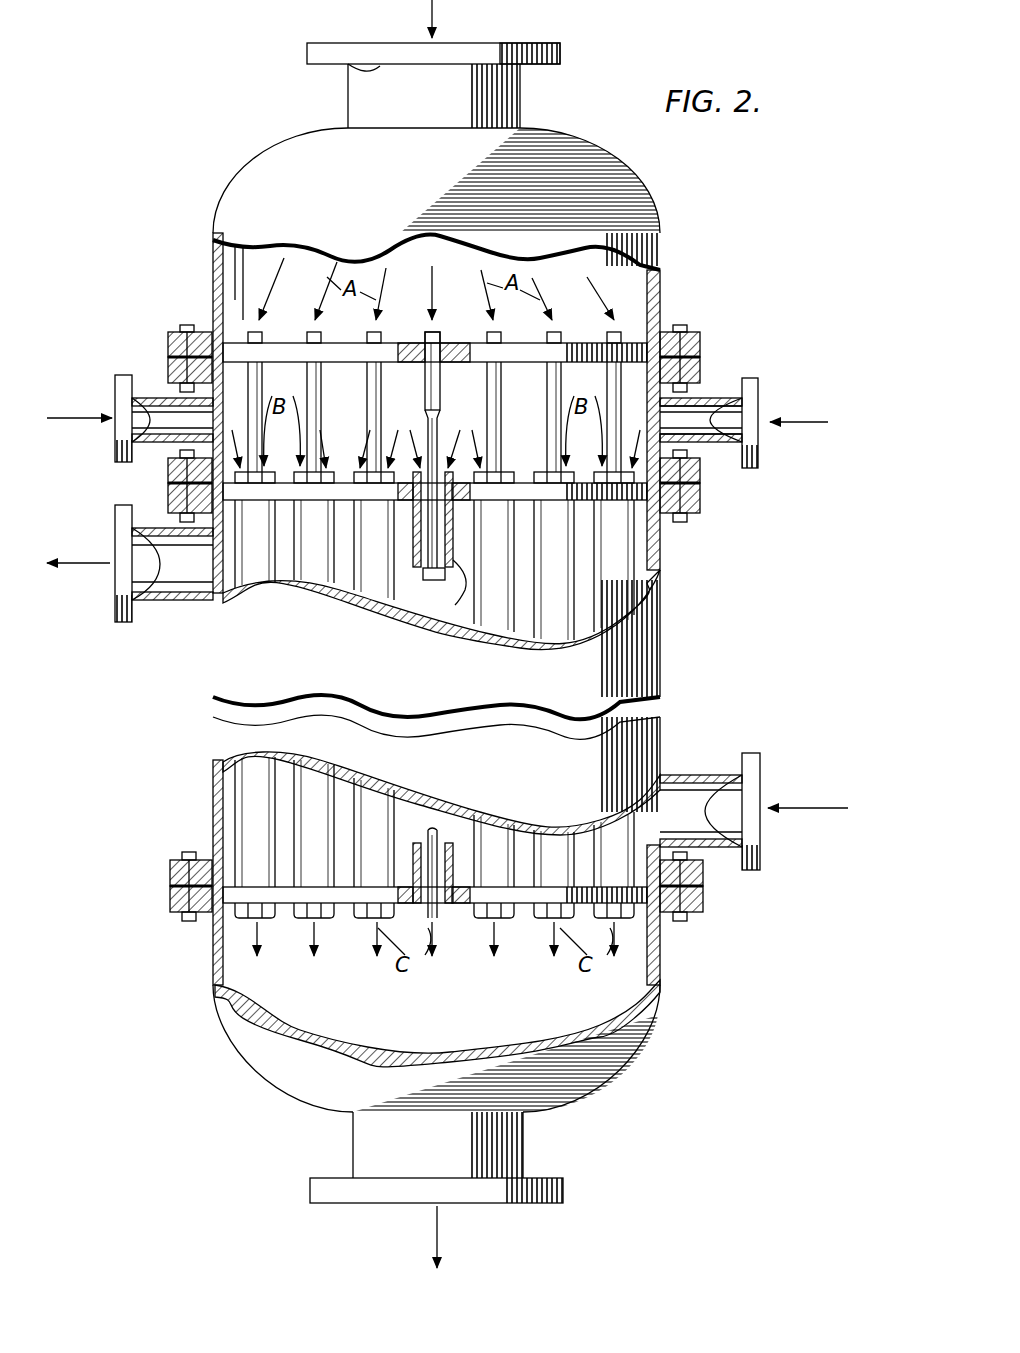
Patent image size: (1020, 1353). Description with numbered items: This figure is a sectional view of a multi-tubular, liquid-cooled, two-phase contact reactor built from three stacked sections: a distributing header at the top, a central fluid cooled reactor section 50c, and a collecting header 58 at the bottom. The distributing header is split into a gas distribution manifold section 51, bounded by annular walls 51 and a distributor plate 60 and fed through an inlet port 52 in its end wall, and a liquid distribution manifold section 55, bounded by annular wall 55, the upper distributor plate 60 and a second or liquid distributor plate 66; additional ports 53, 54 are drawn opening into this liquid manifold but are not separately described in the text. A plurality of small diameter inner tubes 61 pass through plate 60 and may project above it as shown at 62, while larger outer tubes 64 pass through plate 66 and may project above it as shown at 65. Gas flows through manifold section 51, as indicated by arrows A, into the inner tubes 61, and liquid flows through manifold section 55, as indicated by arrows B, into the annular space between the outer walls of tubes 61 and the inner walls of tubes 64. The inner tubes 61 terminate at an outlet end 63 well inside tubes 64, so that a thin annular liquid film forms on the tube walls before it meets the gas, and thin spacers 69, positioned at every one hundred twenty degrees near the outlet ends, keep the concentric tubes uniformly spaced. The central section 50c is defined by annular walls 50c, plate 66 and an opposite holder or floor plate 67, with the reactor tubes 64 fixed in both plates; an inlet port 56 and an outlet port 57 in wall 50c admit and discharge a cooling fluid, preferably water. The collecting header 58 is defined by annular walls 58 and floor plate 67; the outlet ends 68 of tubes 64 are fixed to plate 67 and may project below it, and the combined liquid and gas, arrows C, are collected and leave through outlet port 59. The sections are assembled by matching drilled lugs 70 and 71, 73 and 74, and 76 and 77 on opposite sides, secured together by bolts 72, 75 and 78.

The central fluid cooled reactor section 50c is at (662, 642).
The gas distribution manifold section 51 is at (627, 182).
The inlet port 52 is at (345, 108).
The left inlet nozzle 53 is at (118, 410).
The right inlet nozzle 54 is at (732, 398).
The liquid distribution manifold section 55 is at (663, 418).
The inlet port 56 is at (680, 775).
The outlet port 57 is at (162, 601).
The collecting header 58 is at (661, 1036).
The outlet port 59 is at (352, 1156).
The distributor plate 60 is at (592, 344).
The small diameter tubes 61 is at (440, 430).
The projecting end of inner tube 62 is at (488, 333).
The outlet end of inner tube 63 is at (428, 582).
The reactor tubes 64 is at (525, 600).
The projecting end of outer tube 65 is at (532, 482).
The second distributor plate 66 is at (372, 462).
The floor plate 67 is at (516, 905).
The outlet end of reactor tube 68 is at (470, 920).
The spacers 69 is at (460, 600).
The drilled lug 70 is at (170, 340).
The drilled lug 71 is at (172, 372).
The bolt 72 is at (187, 325).
The drilled lug 73 is at (170, 470).
The drilled lug 74 is at (172, 503).
The bolt 75 is at (180, 456).
The drilled lug 76 is at (170, 870).
The drilled lug 77 is at (170, 907).
The bolt 78 is at (190, 852).